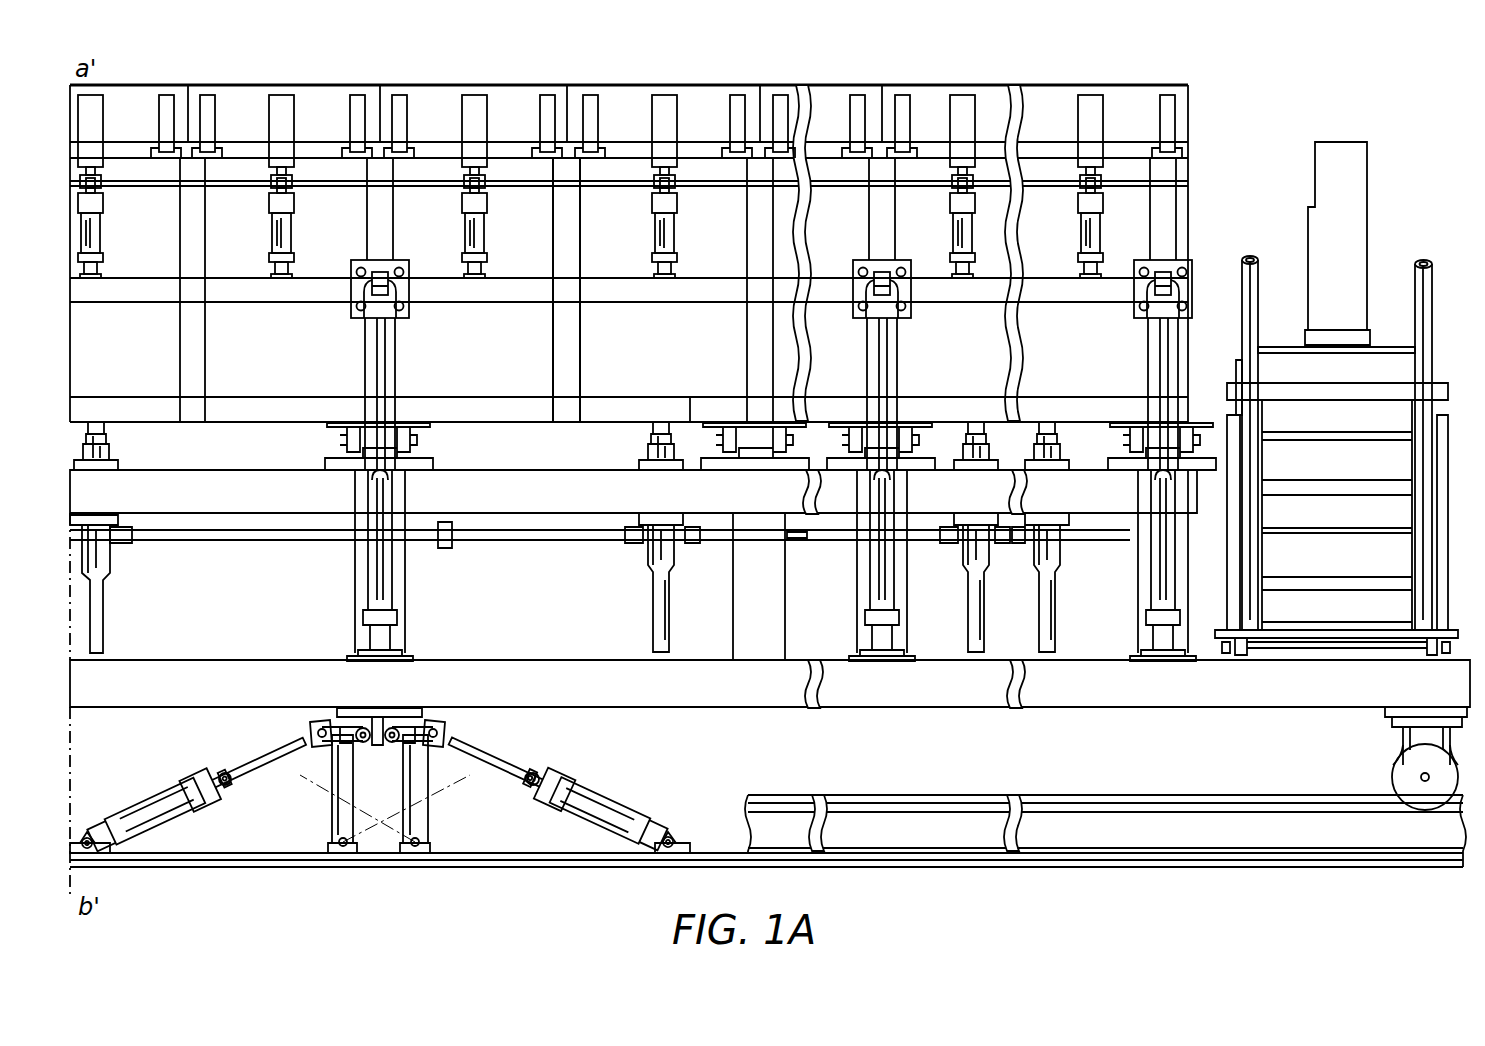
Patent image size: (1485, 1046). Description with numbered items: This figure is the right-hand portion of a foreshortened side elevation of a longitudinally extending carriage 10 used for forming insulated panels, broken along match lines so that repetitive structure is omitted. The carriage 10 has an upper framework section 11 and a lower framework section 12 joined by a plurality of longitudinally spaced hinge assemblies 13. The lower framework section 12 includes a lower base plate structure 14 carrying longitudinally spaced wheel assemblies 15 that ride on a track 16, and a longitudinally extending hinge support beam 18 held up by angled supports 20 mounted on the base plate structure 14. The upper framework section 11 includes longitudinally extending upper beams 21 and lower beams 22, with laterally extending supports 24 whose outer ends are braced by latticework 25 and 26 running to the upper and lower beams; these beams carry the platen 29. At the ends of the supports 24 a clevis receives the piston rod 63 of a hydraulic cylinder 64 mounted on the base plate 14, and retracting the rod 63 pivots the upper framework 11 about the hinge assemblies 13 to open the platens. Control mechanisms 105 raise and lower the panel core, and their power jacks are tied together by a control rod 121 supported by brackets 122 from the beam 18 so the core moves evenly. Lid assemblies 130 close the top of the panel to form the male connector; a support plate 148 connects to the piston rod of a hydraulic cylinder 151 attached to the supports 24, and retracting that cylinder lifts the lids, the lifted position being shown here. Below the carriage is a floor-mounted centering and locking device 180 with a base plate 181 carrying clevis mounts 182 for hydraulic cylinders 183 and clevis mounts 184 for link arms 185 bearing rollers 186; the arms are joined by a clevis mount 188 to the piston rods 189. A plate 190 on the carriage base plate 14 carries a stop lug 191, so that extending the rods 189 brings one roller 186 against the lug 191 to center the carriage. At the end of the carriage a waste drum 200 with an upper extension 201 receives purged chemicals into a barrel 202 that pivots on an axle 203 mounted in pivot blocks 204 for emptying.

The carriage 10 is at (1258, 146).
The upper framework section 11 is at (1192, 212).
The lower framework section 12 is at (420, 597).
The hinge assemblies 13 is at (428, 443).
The lower base plate structure 14 is at (560, 668).
The wheel assemblies 15 is at (1386, 777).
The tracks 16 is at (1010, 793).
The hinge support beam 18 is at (540, 482).
The angled supports 20 is at (783, 592).
The upper beams 21 is at (708, 170).
The lower beams 22 is at (672, 388).
The laterally extending supports 24 is at (530, 293).
The latticework 25 is at (580, 238).
The latticework 26 is at (580, 338).
The platen 29 is at (478, 377).
The piston rod 63 is at (388, 337).
The hydraulic cylinder 64 is at (372, 560).
The control mechanisms 105 is at (672, 585).
The control rod 121 is at (540, 542).
The brackets 122 is at (445, 542).
The lid assemblies 130 is at (490, 202).
The support plate 148 is at (1102, 228).
The hydraulic cylinder 151 is at (290, 232).
The centering and locking device 180 is at (547, 768).
The base plate 181 is at (468, 855).
The clevis mounts 182 is at (86, 838).
The hydraulic cylinders 183 is at (160, 800).
The clevis mounts 184 is at (415, 855).
The link arms 185 is at (410, 801).
The rollers 186 is at (392, 727).
The clevis mount 188 is at (320, 726).
The piston rods 189 is at (226, 770).
The plate 190 is at (408, 710).
The stop lug 191 is at (378, 746).
The waste drum 200 is at (1380, 257).
The upper extension 201 is at (1366, 185).
The barrel 202 is at (1290, 410).
The axle 203 is at (1365, 647).
The pivot blocks 204 is at (1225, 653).